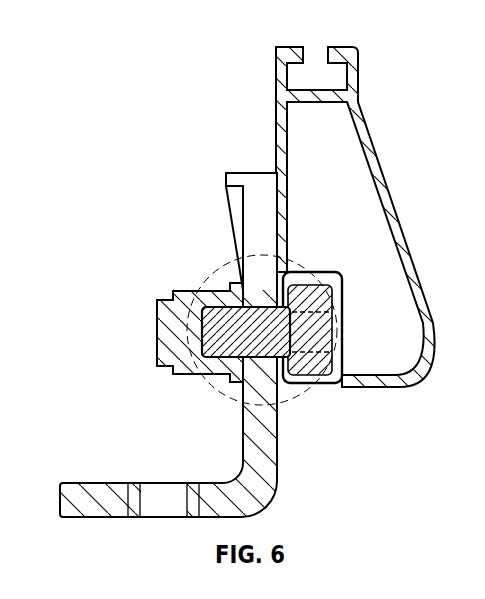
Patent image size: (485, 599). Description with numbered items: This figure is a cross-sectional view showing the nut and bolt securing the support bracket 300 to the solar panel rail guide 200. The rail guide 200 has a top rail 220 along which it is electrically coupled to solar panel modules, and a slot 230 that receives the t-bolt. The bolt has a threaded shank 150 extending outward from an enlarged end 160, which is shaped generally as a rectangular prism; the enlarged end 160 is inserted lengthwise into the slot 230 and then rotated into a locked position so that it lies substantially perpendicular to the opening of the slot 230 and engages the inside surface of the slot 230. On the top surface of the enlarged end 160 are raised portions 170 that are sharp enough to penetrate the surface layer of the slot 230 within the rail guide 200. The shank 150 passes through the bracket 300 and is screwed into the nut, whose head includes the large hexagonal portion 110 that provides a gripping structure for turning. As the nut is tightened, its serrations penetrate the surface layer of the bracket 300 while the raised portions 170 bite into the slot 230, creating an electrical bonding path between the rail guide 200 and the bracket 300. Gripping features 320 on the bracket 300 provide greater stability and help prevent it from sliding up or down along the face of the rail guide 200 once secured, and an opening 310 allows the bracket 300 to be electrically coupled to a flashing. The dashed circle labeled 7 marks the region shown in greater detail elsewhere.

The rail guide 200 is at (387, 180).
The top rail 220 is at (315, 52).
The support bracket 300 is at (87, 482).
The opening 310 is at (163, 482).
The gripping features 320 is at (276, 222).
The large hexagonal portion 110 is at (157, 342).
The threaded shank 150 is at (214, 374).
The slot 230 is at (336, 357).
The enlarged end 160 is at (323, 293).
The raised portions 170 is at (252, 306).
The detail circle for FIG. 7 is at (222, 282).